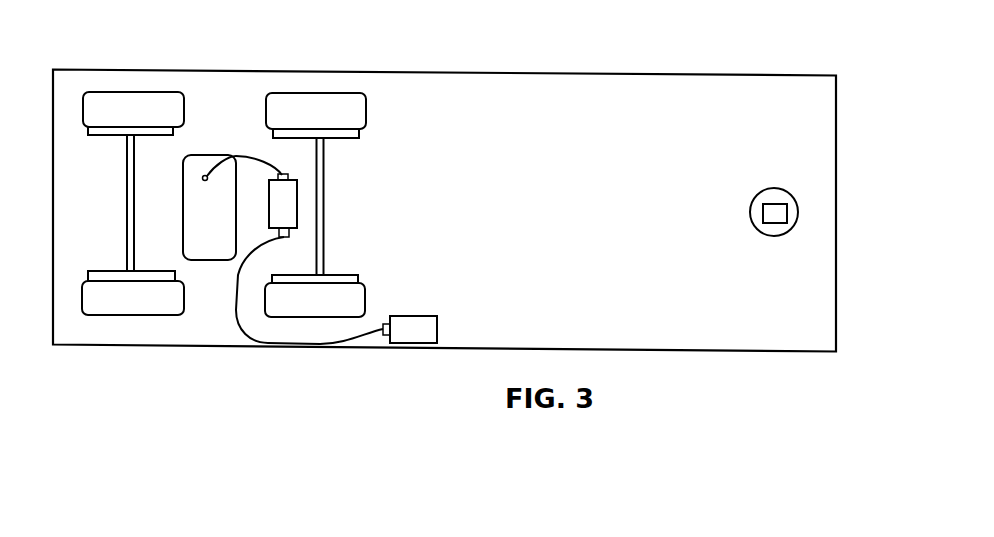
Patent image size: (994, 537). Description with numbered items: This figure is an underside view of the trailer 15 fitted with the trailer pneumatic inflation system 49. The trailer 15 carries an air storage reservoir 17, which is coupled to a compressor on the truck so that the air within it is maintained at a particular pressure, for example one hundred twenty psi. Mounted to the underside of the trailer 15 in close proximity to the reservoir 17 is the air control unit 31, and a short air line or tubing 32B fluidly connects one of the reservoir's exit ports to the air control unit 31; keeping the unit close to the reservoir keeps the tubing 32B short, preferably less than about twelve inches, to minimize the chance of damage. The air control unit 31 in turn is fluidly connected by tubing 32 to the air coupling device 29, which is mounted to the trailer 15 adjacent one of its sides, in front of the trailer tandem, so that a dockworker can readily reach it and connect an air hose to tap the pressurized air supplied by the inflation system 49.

The trailer 15 is at (836, 132).
The air storage reservoir 17 is at (196, 154).
The tubing 32B is at (252, 155).
The air control unit 31 is at (297, 195).
The tubing 32 is at (280, 347).
The inflation system 49 is at (322, 355).
The air coupling device 29 is at (420, 347).